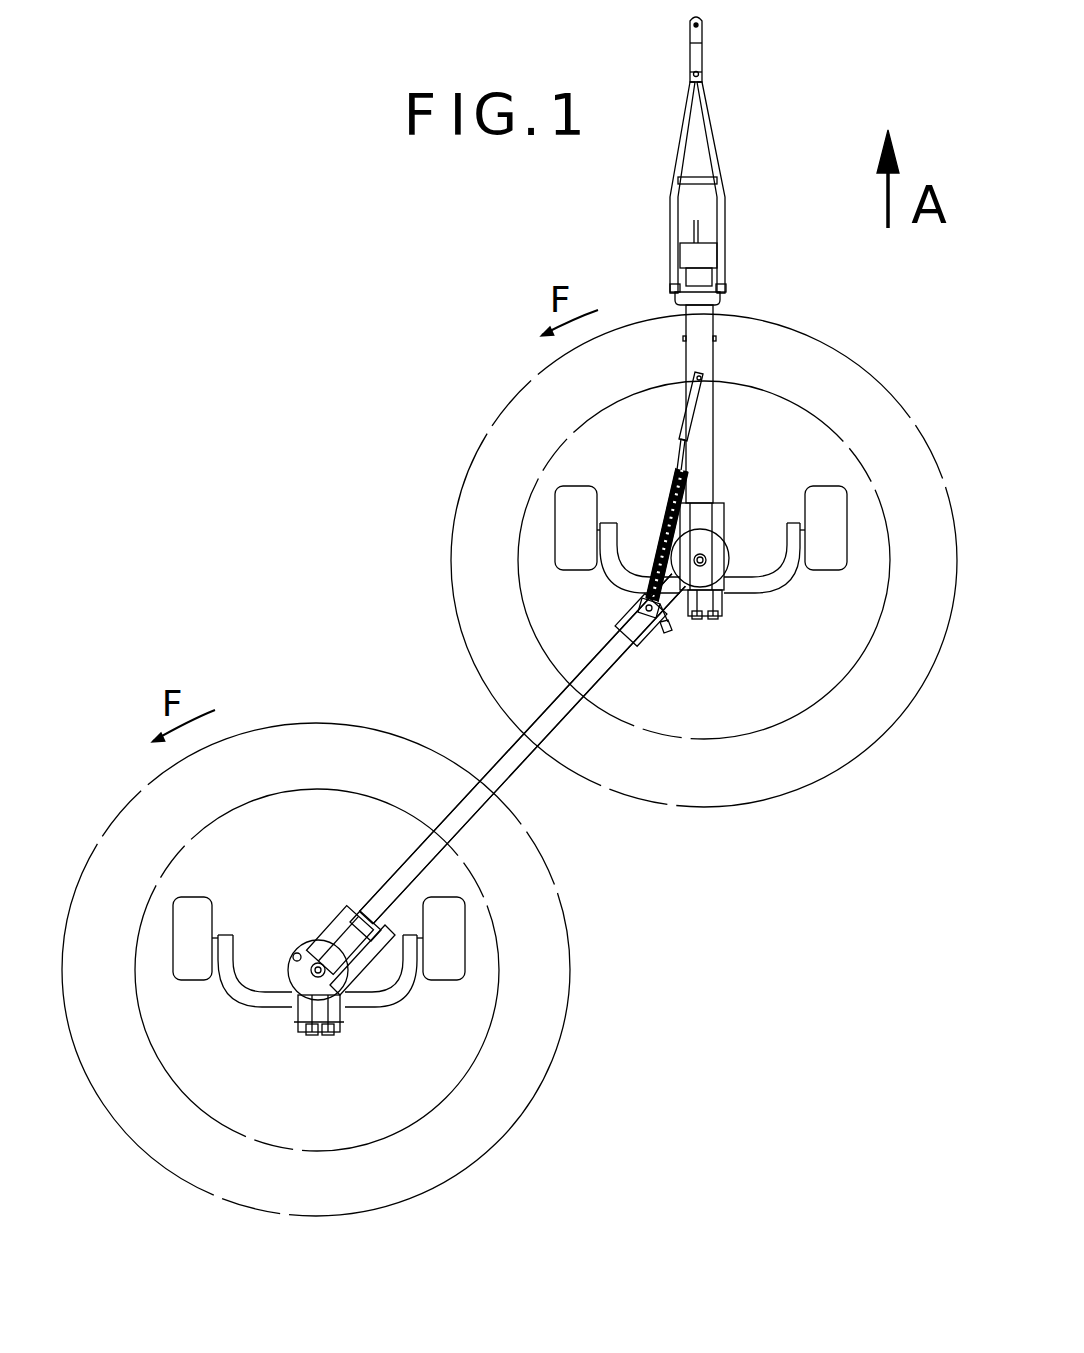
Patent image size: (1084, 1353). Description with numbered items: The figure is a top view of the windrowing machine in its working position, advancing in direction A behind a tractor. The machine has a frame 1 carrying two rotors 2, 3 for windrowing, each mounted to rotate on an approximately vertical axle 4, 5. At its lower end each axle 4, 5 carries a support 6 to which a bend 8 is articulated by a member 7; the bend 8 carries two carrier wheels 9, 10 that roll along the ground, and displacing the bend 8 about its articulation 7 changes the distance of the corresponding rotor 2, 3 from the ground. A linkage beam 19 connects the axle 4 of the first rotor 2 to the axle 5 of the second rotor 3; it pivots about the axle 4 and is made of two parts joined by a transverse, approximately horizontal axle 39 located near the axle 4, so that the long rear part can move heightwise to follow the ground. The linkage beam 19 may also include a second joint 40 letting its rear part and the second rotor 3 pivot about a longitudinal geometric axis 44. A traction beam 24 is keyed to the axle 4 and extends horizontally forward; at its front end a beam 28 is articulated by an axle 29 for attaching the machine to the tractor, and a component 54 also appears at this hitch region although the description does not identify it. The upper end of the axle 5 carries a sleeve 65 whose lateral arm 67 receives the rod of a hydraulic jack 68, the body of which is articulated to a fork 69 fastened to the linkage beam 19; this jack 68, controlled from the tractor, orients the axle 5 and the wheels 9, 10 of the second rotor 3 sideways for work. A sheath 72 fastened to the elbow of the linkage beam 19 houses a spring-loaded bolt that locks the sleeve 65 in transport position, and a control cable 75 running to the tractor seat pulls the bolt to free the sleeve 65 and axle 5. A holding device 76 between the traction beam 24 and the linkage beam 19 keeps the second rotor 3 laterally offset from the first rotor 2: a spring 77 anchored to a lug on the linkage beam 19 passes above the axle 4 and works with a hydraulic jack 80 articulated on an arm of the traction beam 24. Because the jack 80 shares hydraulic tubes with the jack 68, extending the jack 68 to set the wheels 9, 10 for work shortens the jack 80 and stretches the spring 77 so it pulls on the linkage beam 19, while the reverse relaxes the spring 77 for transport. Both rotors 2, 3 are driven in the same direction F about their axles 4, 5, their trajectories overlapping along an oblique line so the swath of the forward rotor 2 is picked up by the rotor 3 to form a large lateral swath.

The frame 1 is at (503, 752).
The first rotor 2 is at (456, 538).
The second rotor 3 is at (122, 806).
The approximately vertical axle 4 is at (690, 580).
The approximately vertical axle 5 is at (360, 990).
The support 6 is at (310, 1037).
The member 7 is at (332, 1030).
The bend 8 is at (781, 580).
The carrier wheel 9 is at (572, 510).
The carrier wheel 10 is at (828, 530).
The linkage beam 19 is at (525, 766).
The traction beam 24 is at (700, 328).
The beam 28 is at (713, 120).
The axle 29 is at (727, 288).
The axle 39 is at (672, 622).
The second joint 40 is at (671, 654).
The longitudinal geometric axis 44 is at (628, 636).
The latch housing 54 is at (697, 220).
The sleeve 65 is at (312, 975).
The lateral arm 67 is at (300, 970).
The hydraulic jack 68 is at (330, 930).
The fork 69 is at (358, 915).
The sheath 72 is at (345, 965).
The control cable 75 is at (366, 900).
The holding device 76 is at (660, 480).
The spring 77 is at (660, 530).
The hydraulic jack 80 is at (692, 407).